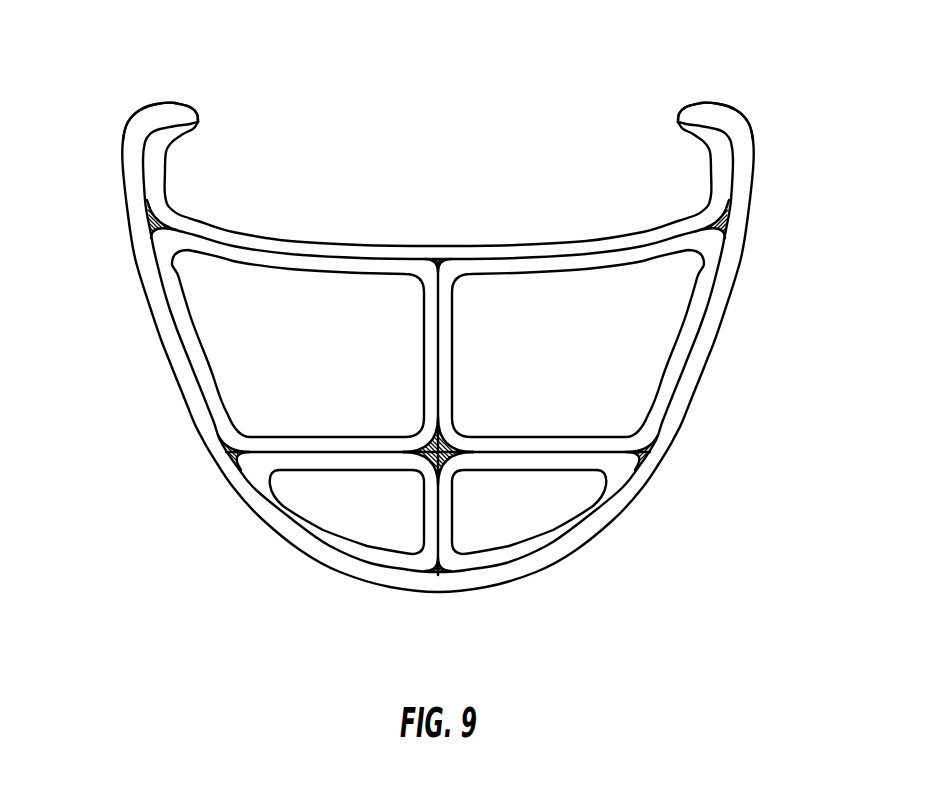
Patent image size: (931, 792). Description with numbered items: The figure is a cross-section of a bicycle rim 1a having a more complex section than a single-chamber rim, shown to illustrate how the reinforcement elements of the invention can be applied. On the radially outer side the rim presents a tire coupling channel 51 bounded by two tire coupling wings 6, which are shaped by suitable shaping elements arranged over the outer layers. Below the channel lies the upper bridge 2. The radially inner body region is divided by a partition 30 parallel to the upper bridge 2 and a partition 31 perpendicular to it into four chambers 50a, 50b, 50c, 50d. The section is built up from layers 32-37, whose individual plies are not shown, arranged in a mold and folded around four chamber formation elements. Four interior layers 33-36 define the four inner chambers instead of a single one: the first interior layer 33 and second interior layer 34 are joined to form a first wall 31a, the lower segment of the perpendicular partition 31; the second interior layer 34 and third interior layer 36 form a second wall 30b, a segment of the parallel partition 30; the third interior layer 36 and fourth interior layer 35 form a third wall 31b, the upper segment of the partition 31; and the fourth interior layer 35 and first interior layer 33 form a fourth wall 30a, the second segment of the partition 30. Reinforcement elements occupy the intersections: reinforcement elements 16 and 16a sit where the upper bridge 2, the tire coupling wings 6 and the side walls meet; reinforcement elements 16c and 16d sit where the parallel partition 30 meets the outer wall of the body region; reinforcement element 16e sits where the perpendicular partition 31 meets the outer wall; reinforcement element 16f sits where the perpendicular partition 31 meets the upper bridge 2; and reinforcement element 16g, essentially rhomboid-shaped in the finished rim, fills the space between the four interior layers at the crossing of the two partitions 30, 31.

The rim 1a is at (91, 112).
The upper bridge 2 is at (578, 237).
The tire coupling wings 6 is at (172, 114).
The reinforcement element 16 is at (157, 228).
The reinforcement element 16a is at (717, 223).
The reinforcement element 16c is at (247, 457).
The reinforcement element 16d is at (637, 452).
The reinforcement element 16e is at (430, 572).
The reinforcement element 16f is at (443, 267).
The reinforcement element 16g is at (443, 443).
The partition 30 is at (583, 440).
The fourth wall 30a is at (328, 446).
The second wall 30b is at (568, 447).
The partition 31 is at (424, 347).
The first wall 31a is at (434, 498).
The third wall 31b is at (437, 310).
The layer 32 is at (497, 572).
The first interior layer 33 is at (307, 520).
The second interior layer 34 is at (540, 540).
The fourth interior layer 35 is at (197, 378).
The third interior layer 36 is at (680, 367).
The layer 37 is at (660, 230).
The chamber 50a is at (287, 287).
The chamber 50b is at (670, 297).
The chamber 50c is at (387, 523).
The chamber 50d is at (553, 503).
The tire coupling channel 51 is at (452, 140).